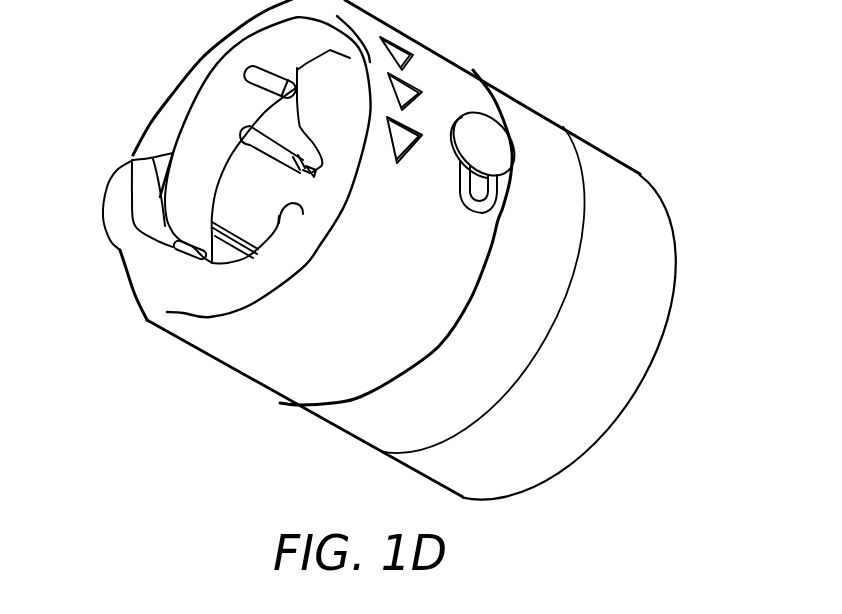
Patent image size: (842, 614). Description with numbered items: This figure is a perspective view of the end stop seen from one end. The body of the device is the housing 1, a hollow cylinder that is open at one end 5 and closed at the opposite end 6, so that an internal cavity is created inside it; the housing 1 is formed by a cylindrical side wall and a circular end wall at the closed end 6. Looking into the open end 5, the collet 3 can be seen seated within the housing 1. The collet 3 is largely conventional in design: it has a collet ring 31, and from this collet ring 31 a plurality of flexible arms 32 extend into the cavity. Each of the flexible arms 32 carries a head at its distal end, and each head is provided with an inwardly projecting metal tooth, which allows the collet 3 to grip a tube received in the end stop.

The housing 1 is at (635, 188).
The collet 3 is at (181, 284).
The open end 5 is at (97, 274).
The closed end 6 is at (601, 457).
The collet ring 31 is at (217, 80).
The flexible arms 32 is at (241, 183).